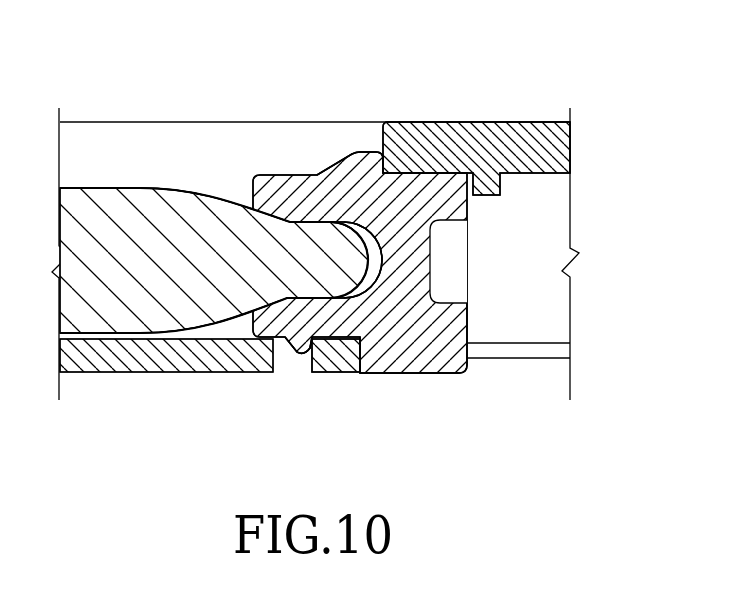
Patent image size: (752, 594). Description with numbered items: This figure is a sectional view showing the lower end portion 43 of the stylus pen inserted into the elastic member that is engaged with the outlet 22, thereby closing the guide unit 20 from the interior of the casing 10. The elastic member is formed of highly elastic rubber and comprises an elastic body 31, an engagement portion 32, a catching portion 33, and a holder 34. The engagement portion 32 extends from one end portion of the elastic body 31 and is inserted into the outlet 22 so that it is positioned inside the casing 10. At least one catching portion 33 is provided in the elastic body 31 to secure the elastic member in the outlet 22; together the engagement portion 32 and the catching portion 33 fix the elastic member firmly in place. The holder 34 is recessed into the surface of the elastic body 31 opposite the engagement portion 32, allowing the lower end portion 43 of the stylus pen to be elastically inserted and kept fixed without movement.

The casing 10 is at (558, 215).
The guide unit 20 is at (117, 140).
The outlet 22 is at (415, 123).
The elastic body 31 is at (271, 175).
The engagement portion 32 is at (413, 362).
The catching portion 33 is at (358, 157).
The holder 34 is at (315, 215).
The lower end portion 43 is at (187, 210).